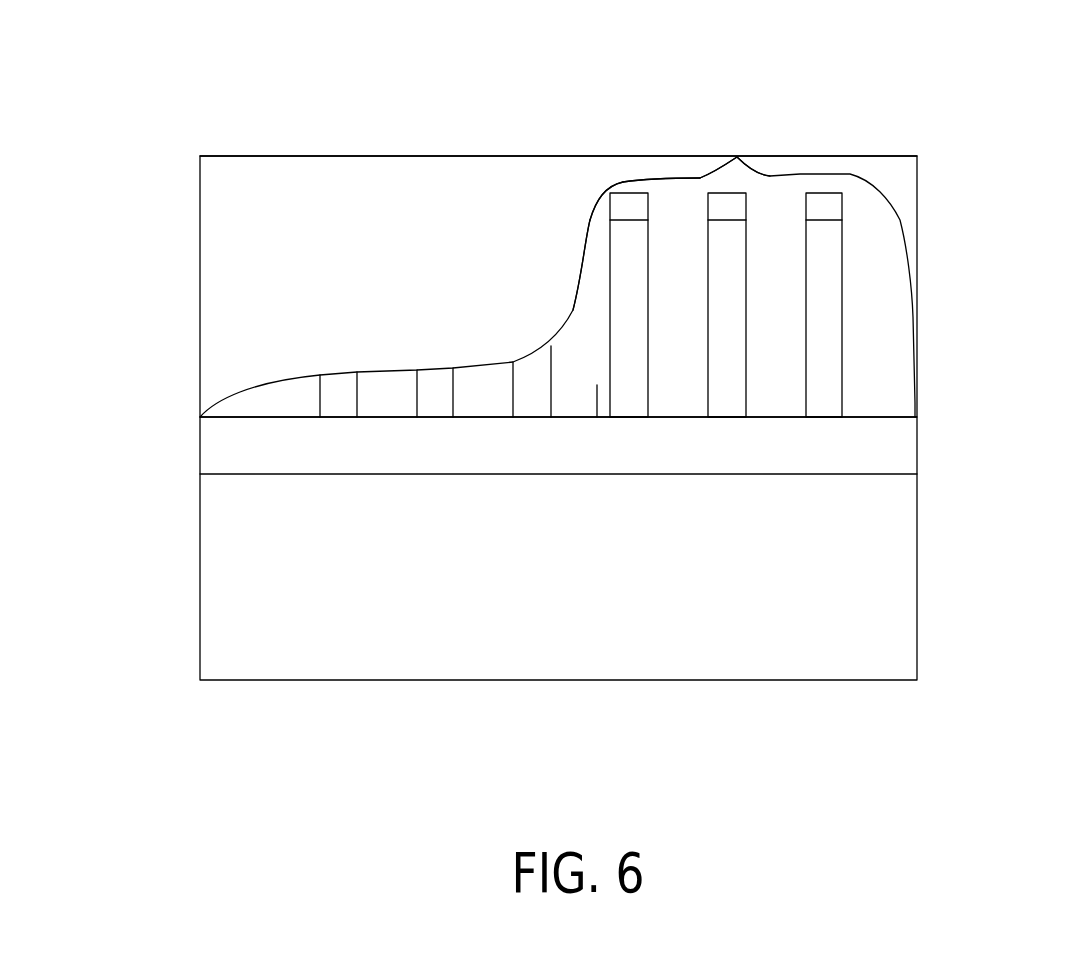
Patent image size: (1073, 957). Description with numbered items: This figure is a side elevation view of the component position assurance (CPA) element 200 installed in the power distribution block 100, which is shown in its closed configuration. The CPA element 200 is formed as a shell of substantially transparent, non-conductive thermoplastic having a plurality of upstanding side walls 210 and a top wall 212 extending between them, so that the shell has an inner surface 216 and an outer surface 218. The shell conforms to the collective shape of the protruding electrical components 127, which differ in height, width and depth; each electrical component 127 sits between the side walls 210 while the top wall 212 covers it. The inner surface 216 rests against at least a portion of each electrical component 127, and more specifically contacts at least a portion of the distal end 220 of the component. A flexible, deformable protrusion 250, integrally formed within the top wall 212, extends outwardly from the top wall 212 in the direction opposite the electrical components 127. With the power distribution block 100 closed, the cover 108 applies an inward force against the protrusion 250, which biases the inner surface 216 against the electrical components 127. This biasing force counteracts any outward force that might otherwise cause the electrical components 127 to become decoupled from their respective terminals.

The power distribution block 100 is at (162, 497).
The cover 108 is at (863, 155).
The electrical components 127 is at (513, 387).
The component position assurance (CPA) element 200 is at (936, 296).
The side walls 210 is at (574, 306).
The top wall 212 is at (622, 178).
The inner surface 216 is at (591, 228).
The outer surface 218 is at (583, 257).
The distal end 220 is at (747, 210).
The protrusion 250 is at (737, 157).